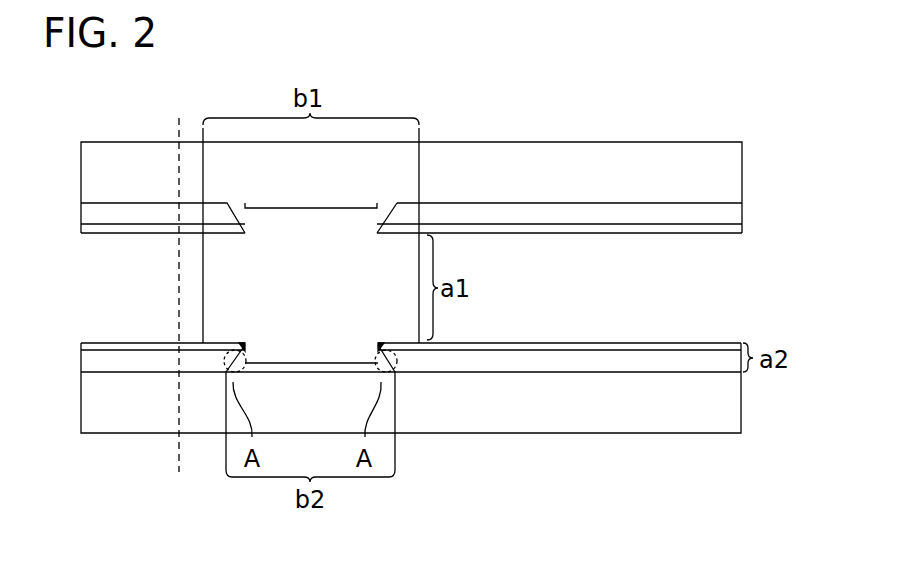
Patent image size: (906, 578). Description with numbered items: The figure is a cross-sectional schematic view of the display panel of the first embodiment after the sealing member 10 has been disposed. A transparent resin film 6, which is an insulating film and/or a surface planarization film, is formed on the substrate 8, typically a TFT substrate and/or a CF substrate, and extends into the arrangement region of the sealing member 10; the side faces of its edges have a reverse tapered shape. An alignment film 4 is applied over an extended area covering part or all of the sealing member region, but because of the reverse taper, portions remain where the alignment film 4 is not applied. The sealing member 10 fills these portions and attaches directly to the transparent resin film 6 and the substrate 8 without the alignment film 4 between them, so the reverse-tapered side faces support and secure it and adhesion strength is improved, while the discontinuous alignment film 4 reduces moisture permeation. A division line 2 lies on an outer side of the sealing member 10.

The division line 2 is at (178, 275).
The alignment film 4 is at (478, 348).
The transparent resin film 6 is at (552, 360).
The substrate 8 is at (738, 399).
The sealing member 10 is at (215, 319).